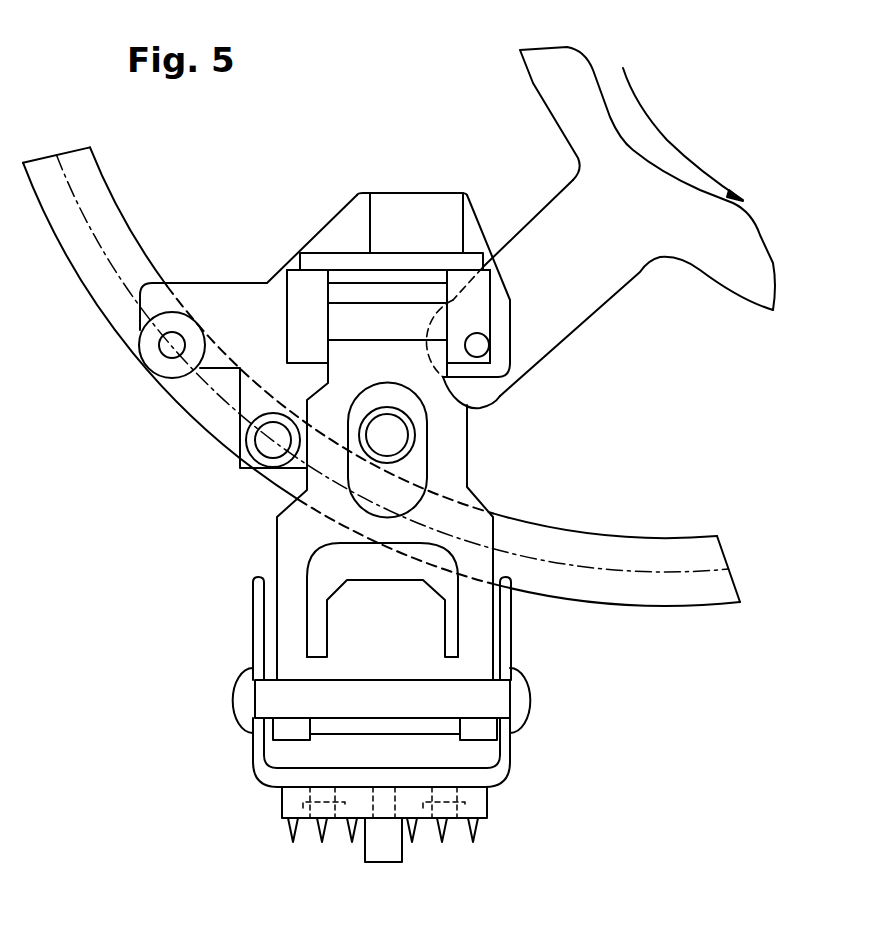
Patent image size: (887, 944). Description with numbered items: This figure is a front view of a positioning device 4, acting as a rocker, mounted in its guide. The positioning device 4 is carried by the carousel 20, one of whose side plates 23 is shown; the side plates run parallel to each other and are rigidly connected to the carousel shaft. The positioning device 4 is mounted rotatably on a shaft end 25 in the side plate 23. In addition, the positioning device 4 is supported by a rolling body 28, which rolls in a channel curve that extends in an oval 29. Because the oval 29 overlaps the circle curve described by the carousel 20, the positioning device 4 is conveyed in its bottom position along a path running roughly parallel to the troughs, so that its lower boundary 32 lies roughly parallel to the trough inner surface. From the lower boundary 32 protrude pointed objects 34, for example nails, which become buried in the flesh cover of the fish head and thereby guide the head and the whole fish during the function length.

The positioning device 4 is at (478, 660).
The carousel 20 is at (707, 252).
The side plate 23 is at (625, 255).
The shaft end 25 is at (477, 345).
The rolling body 28 is at (172, 345).
The oval 29 is at (220, 397).
The lower boundary 32 is at (423, 820).
The pointed object 34 is at (293, 842).